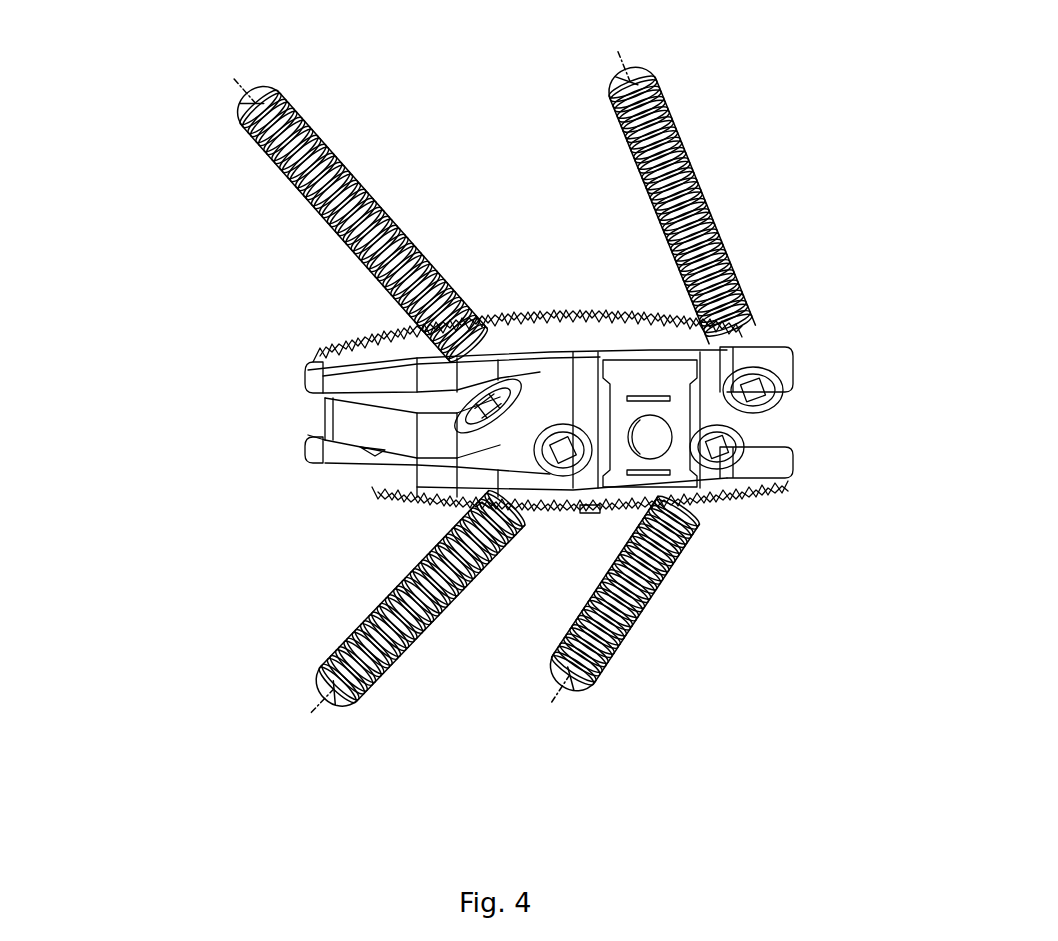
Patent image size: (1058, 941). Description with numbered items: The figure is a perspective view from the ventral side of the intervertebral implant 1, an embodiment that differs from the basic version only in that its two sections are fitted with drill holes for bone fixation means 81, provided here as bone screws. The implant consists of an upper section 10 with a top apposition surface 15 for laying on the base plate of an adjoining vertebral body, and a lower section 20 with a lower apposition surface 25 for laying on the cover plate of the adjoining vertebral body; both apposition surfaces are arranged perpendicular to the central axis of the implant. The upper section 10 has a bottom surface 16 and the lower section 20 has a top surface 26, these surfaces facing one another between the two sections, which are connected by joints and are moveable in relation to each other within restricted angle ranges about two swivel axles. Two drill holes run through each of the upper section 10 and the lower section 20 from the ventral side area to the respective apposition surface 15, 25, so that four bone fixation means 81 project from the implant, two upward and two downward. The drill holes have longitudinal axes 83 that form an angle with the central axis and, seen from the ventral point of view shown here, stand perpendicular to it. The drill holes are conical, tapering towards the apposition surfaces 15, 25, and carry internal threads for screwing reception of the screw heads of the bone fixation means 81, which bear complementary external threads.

The intervertebral implant 1 is at (300, 321).
The upper section 10 is at (800, 327).
The lower section 20 is at (788, 502).
The top apposition surface 15 is at (605, 318).
The bottom surface 16 is at (320, 390).
The top surface 26 is at (340, 440).
The lower apposition surface 25 is at (598, 515).
The bone fixation means 81 is at (693, 183).
The longitudinal axes 83 is at (477, 372).